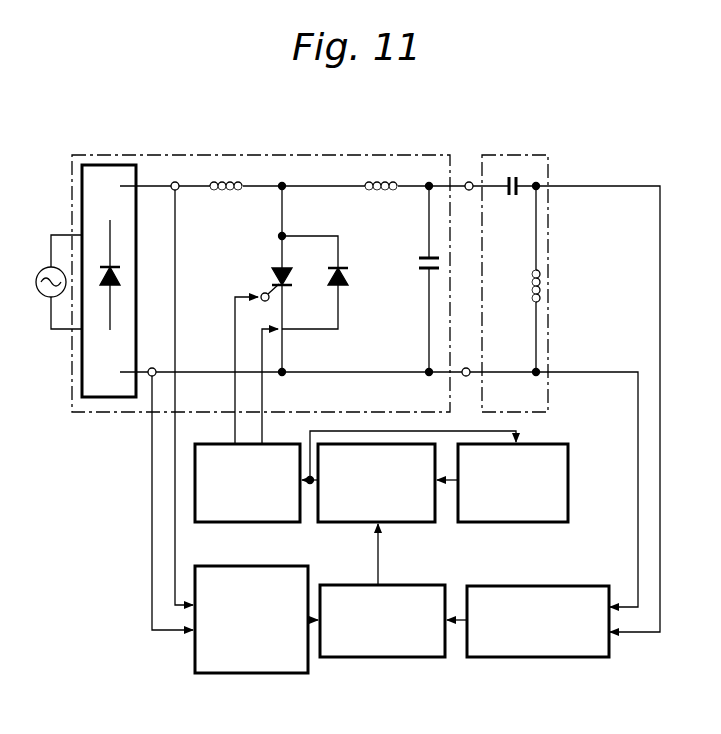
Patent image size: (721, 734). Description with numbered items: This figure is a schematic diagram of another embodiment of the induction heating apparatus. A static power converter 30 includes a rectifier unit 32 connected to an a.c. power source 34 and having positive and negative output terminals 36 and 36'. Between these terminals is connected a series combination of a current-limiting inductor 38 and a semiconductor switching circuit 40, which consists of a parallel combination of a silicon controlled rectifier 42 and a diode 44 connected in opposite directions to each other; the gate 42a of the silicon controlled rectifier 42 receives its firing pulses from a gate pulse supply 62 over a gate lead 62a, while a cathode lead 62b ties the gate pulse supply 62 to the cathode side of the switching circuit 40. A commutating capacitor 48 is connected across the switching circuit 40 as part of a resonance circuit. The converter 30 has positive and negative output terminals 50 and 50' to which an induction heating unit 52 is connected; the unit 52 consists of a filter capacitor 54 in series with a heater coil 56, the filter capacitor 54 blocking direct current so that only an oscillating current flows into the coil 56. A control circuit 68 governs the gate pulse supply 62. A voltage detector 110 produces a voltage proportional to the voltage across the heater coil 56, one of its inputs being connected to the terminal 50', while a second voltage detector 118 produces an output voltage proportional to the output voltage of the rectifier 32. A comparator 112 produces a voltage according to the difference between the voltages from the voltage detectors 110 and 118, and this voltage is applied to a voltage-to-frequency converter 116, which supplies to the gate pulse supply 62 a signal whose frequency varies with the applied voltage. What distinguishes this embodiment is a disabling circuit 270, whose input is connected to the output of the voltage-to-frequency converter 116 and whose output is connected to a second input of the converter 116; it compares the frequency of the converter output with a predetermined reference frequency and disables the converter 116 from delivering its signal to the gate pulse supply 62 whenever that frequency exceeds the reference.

The static power converter 30 is at (113, 152).
The rectifier unit 32 is at (137, 270).
The a.c. power source 34 is at (46, 300).
The positive output terminal 36 is at (189, 154).
The negative output terminal 36' is at (157, 352).
The current-limiting inductor 38 is at (226, 191).
The semiconductor switching circuit 40 is at (320, 310).
The silicon controlled rectifier 42 is at (270, 272).
The gate of silicon controlled rectifier 42a is at (256, 296).
The diode 44 is at (346, 278).
The commutating capacitor 48 is at (418, 268).
The positive output terminal 50 is at (459, 153).
The negative output terminal 50' is at (440, 386).
The induction heating unit 52 is at (504, 152).
The filter capacitor 54 is at (508, 198).
The heater coil 56 is at (381, 191).
The gate pulse supply 62 is at (220, 443).
The gate lead 62a is at (232, 406).
The cathode lead 62b is at (268, 390).
The control circuit 68 is at (458, 560).
The voltage detector 110 is at (550, 585).
The comparator 112 is at (398, 658).
The voltage-to-frequency converter 116 is at (362, 524).
The voltage detector 118 is at (220, 566).
The disabling circuit 270 is at (570, 458).